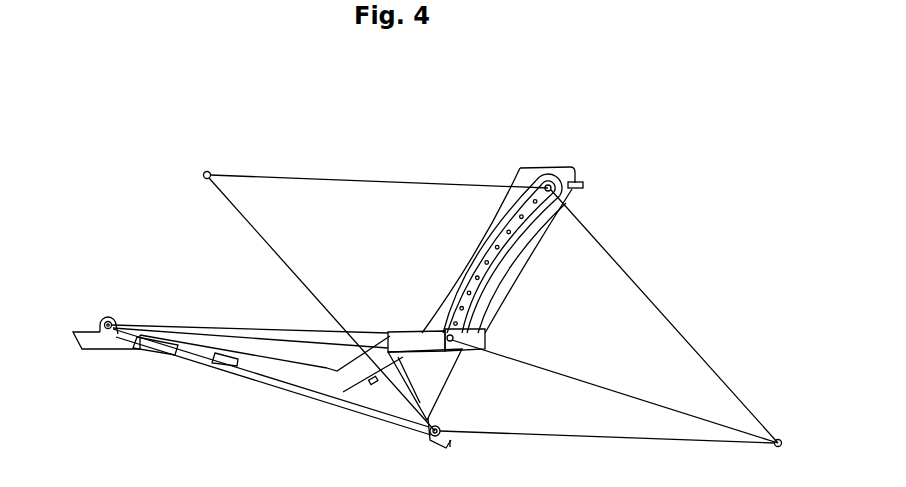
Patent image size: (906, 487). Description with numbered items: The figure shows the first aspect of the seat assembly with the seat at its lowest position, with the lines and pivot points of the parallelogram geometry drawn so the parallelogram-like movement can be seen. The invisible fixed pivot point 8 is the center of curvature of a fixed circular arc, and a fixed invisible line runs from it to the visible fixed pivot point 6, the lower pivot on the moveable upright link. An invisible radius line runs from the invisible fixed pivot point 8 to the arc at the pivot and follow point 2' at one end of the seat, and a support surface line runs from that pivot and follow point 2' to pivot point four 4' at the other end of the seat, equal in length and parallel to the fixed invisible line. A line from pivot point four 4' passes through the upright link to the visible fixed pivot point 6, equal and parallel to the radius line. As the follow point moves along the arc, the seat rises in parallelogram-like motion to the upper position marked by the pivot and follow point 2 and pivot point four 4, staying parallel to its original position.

The pivot point four 4 is at (332, 277).
The pivot and follow point 2 is at (600, 301).
The pivot and follow point 2' is at (560, 373).
The pivot point four 4' is at (207, 315).
The visible fixed pivot point 6 is at (282, 400).
The invisible fixed pivot point 8 is at (611, 382).